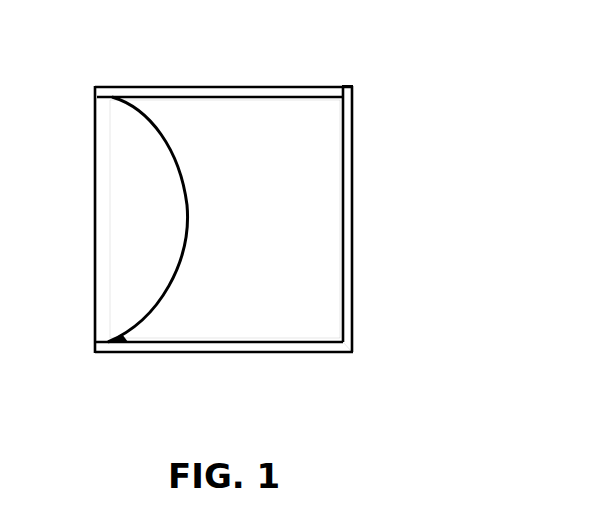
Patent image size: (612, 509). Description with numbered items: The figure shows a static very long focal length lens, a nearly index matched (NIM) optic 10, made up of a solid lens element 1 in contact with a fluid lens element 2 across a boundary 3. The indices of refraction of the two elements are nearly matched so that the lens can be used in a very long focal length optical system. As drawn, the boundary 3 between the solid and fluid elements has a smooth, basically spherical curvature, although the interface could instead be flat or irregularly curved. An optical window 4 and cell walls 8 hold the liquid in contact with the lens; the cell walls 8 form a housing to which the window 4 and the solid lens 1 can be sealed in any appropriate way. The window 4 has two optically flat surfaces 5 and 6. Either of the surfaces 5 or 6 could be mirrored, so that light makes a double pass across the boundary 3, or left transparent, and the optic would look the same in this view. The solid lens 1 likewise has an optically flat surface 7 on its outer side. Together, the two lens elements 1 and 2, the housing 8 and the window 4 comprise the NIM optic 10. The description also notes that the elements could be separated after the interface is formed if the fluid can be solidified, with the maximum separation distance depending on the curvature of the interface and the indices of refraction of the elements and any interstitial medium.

The solid lens element 1 is at (112, 116).
The fluid lens element 2 is at (217, 127).
The boundary 3 is at (150, 117).
The optical window 4 is at (350, 86).
The optically flat surface 5 is at (346, 334).
The optically flat surface 6 is at (353, 322).
The optically flat surface 7 is at (95, 322).
The cell walls 8 is at (295, 86).
The nearly index matched (NIM) optic 10 is at (282, 215).